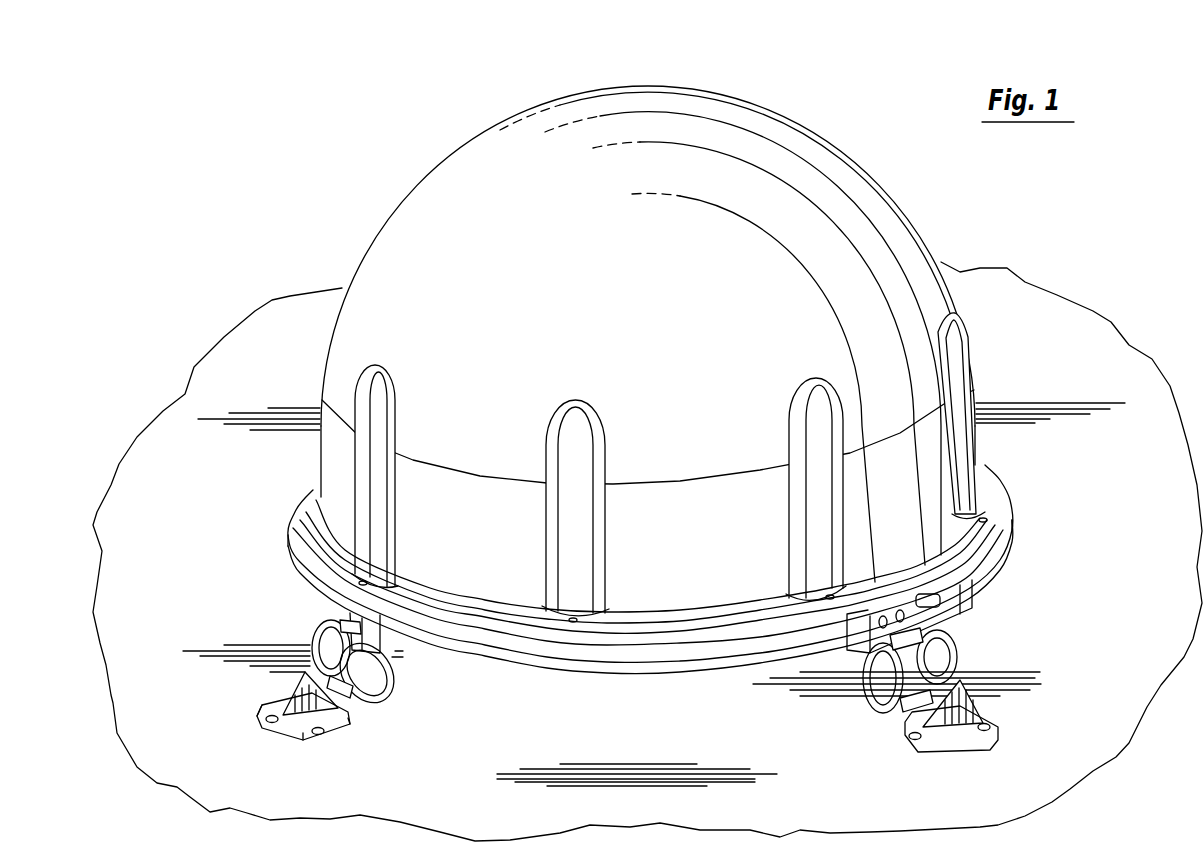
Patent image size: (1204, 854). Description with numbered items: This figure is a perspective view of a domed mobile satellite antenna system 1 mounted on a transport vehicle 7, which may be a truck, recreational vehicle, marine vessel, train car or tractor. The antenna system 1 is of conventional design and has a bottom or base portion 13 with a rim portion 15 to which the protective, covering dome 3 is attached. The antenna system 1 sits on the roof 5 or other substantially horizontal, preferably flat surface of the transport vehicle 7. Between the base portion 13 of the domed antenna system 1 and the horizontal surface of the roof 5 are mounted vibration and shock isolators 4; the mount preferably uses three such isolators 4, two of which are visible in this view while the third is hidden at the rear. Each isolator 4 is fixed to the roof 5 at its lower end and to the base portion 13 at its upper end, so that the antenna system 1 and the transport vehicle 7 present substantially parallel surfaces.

The mobile satellite antenna system 1 is at (611, 419).
The protective covering dome 3 is at (661, 331).
The vibration and shock isolator 4 is at (388, 708).
The roof 5 is at (1128, 569).
The transport vehicle 7 is at (1114, 319).
The base portion 13 is at (626, 668).
The rim portion 15 is at (300, 586).